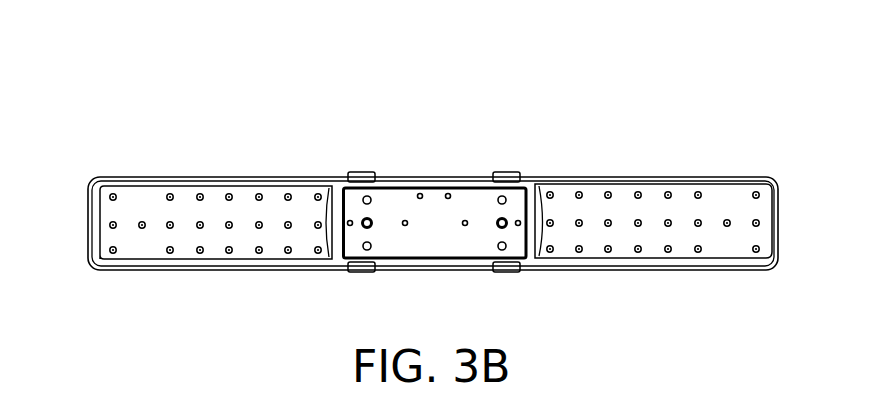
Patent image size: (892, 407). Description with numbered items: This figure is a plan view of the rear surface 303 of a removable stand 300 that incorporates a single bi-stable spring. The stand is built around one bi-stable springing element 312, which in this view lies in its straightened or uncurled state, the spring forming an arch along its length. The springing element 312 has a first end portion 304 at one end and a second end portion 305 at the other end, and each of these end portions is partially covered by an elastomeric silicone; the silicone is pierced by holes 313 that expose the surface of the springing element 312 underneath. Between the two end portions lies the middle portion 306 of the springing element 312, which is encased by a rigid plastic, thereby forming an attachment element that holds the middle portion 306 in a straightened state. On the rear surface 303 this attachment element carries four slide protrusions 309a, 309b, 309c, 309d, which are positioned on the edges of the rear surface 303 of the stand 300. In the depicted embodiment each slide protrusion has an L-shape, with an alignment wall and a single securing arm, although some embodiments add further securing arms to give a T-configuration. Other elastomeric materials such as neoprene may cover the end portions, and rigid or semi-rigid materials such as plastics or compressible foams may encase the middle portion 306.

The removable stand 300 is at (436, 179).
The rear surface 303 is at (223, 208).
The first end portion 304 is at (118, 210).
The second end portion 305 is at (772, 197).
The middle portion 306 is at (518, 138).
The slide protrusion 309a is at (363, 270).
The slide protrusion 309b is at (510, 270).
The slide protrusion 309c is at (508, 177).
The slide protrusion 309d is at (360, 173).
The bi-stable springing element 312 is at (237, 268).
The holes 313 is at (287, 195).